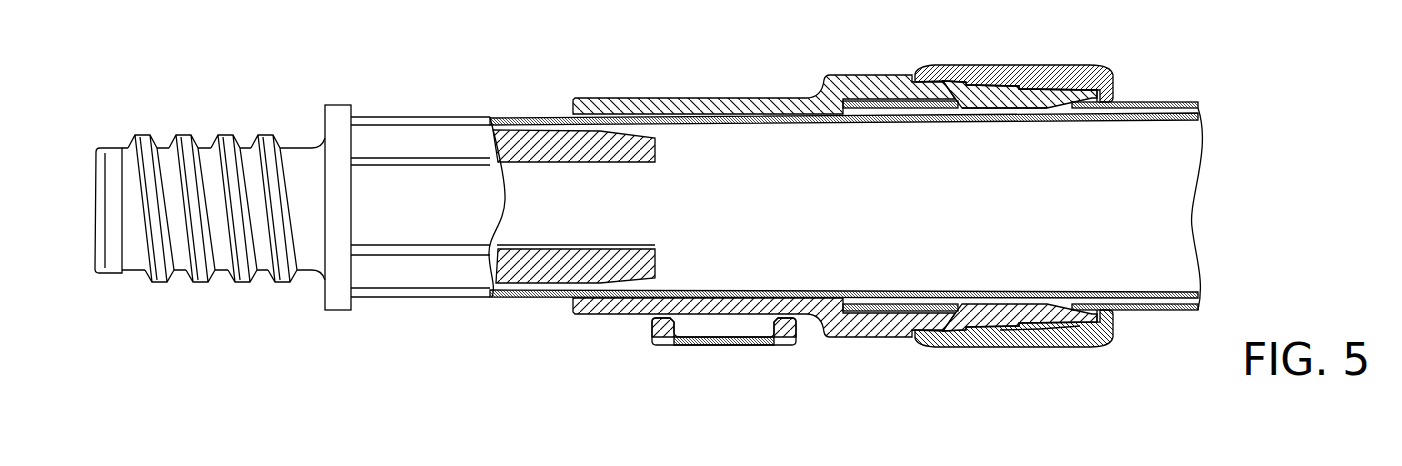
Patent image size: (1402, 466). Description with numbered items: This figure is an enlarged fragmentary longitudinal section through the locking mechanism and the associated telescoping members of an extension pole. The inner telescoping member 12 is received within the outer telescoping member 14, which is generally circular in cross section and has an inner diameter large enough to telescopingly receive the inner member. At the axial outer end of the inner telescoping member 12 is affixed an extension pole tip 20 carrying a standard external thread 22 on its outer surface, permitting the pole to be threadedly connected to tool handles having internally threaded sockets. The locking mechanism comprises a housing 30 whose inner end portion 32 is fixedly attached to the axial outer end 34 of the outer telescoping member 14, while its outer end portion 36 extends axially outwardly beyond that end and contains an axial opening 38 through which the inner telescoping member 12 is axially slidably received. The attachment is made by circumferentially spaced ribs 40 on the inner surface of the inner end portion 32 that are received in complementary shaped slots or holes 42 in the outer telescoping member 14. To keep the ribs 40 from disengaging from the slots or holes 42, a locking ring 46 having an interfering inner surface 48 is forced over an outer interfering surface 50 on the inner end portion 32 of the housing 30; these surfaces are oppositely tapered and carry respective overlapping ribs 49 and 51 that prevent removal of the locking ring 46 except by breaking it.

The inner telescoping member 12 is at (452, 118).
The outer telescoping member 14 is at (1180, 102).
The extension pole tip 20 is at (223, 205).
The external thread 22 is at (206, 276).
The housing 30 is at (764, 173).
The inner end portion 32 is at (958, 93).
The axial outer end 34 is at (1147, 102).
The outer end portion 36 is at (673, 103).
The axial opening 38 is at (737, 115).
The ribs 40 is at (1020, 107).
The slots or holes 42 is at (1067, 108).
The locking ring 46 is at (1042, 67).
The interfering inner surface 48 is at (983, 85).
The overlapping rib 49 is at (1017, 332).
The outer interfering surface 50 is at (1008, 84).
The overlapping rib 51 is at (1027, 330).